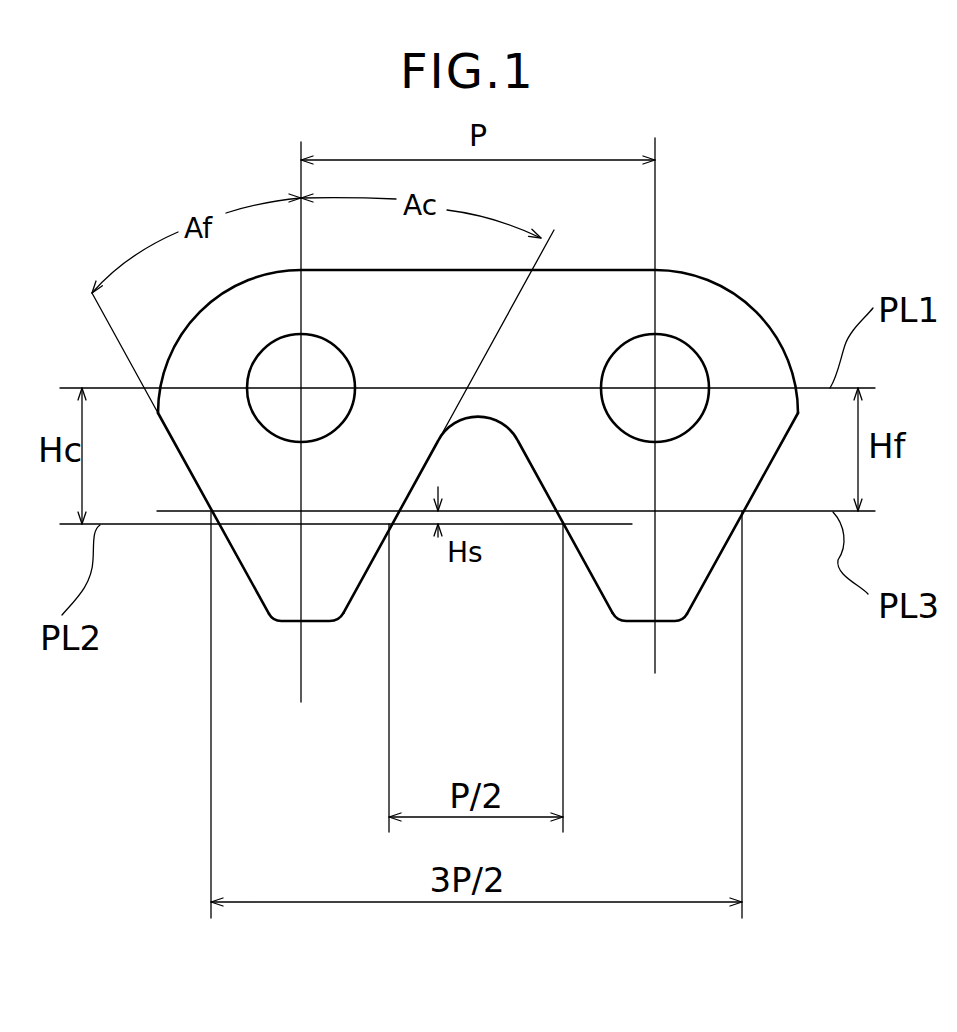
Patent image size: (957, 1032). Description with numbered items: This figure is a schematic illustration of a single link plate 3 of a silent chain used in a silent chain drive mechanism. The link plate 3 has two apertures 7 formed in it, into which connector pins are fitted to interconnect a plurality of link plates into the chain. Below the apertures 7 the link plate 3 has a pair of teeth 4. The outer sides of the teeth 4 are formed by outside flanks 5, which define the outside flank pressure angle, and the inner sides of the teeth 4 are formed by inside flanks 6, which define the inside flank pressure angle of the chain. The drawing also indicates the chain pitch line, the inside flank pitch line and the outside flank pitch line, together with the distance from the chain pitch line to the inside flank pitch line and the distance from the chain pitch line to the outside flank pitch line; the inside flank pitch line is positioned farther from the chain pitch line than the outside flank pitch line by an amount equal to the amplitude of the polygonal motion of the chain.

The link plate 3 is at (467, 453).
The teeth 4 is at (467, 571).
The outside flanks 5 is at (193, 482).
The inside flanks 6 is at (370, 570).
The apertures 7 is at (694, 350).